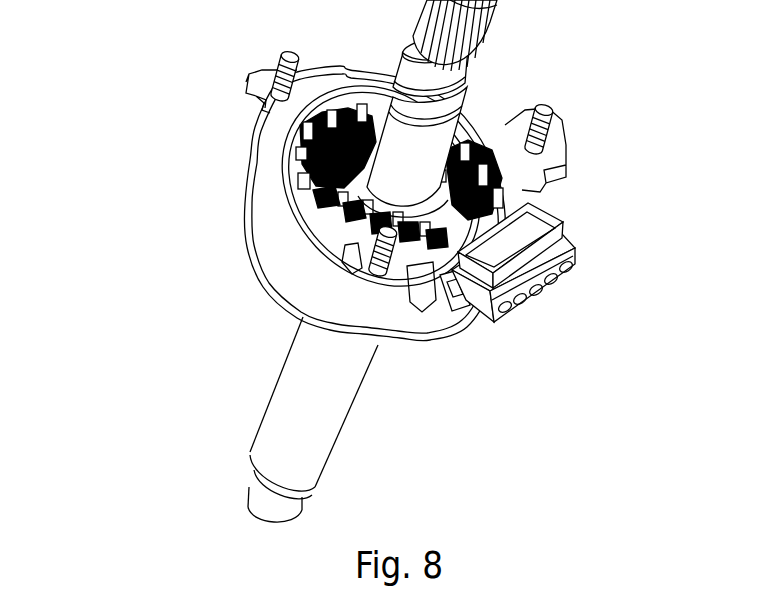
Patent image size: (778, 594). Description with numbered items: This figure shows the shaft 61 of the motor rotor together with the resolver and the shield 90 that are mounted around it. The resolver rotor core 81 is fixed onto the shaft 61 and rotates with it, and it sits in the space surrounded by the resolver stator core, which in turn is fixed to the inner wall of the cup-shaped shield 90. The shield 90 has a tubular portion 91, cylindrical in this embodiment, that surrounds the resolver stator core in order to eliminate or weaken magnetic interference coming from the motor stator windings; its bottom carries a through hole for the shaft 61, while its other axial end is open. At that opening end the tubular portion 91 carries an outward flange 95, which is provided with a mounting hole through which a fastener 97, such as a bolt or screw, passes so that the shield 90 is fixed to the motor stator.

The shaft 61 is at (297, 407).
The resolver rotor core 81 is at (450, 192).
The shield 90 is at (124, 62).
The tubular portion 91 is at (282, 246).
The outward flange 95 is at (254, 78).
The fastener 97 is at (549, 140).